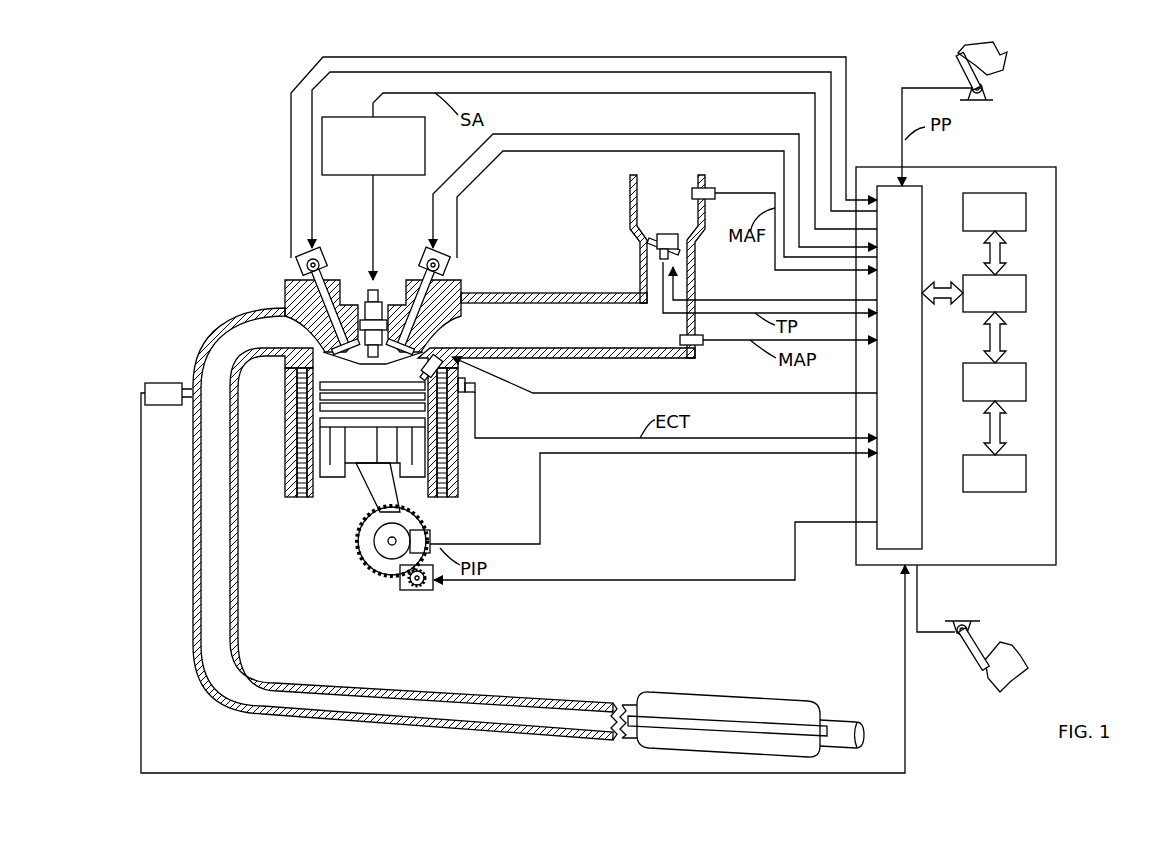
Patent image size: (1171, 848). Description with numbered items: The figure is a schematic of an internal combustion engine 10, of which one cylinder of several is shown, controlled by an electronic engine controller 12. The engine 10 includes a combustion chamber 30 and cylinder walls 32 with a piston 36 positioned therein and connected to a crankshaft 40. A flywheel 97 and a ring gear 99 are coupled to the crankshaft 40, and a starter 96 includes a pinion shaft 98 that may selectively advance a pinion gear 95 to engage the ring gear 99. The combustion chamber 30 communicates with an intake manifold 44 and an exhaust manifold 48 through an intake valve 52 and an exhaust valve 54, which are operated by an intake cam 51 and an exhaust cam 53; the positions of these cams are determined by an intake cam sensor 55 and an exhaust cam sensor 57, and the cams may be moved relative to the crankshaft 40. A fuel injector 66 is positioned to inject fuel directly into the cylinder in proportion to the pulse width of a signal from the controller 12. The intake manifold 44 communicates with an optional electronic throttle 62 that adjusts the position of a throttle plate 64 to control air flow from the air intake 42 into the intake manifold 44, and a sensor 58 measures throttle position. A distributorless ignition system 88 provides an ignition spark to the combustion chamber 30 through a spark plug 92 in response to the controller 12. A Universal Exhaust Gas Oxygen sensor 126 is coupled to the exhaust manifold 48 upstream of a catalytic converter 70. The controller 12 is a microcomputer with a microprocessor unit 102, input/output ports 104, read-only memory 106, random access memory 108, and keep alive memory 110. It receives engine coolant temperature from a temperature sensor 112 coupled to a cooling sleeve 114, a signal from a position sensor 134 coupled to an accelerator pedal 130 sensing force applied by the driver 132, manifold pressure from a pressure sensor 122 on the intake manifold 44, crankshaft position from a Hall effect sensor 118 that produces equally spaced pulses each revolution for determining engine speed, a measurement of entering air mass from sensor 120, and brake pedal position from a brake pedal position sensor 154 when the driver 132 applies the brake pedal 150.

The internal combustion engine 10 is at (228, 238).
The electronic engine controller 12 is at (1056, 170).
The combustion chamber 30 is at (305, 452).
The cylinder walls 32 is at (322, 485).
The piston 36 is at (357, 487).
The crankshaft 40 is at (378, 566).
The air intake 42 is at (677, 218).
The intake manifold 44 is at (620, 341).
The exhaust manifold 48 is at (268, 342).
The intake cam 51 is at (426, 252).
The intake valve 52 is at (440, 333).
The exhaust cam 53 is at (320, 252).
The exhaust valve 54 is at (322, 325).
The intake cam sensor 55 is at (445, 275).
The exhaust cam sensor 57 is at (300, 262).
The throttle position sensor 58 is at (650, 266).
The electronic throttle 62 is at (676, 243).
The throttle plate 64 is at (650, 243).
The fuel injector 66 is at (440, 372).
The catalytic converter 70 is at (650, 690).
The distributorless ignition system 88 is at (337, 117).
The spark plug 92 is at (378, 292).
The pinion gear 95 is at (420, 597).
The starter 96 is at (430, 588).
The flywheel 97 is at (362, 543).
The pinion shaft 98 is at (410, 595).
The ring gear 99 is at (385, 575).
The microprocessor unit 102 is at (1026, 292).
The input/output ports 104 is at (922, 187).
The read-only memory 106 is at (1026, 210).
The random access memory 108 is at (1026, 380).
The keep alive memory 110 is at (1026, 470).
The temperature sensor 112 is at (474, 384).
The cooling sleeve 114 is at (448, 455).
The Hall effect sensor 118 is at (430, 530).
The air mass sensor 120 is at (705, 188).
The pressure sensor 122 is at (700, 348).
The Universal Exhaust Gas Oxygen (UEGO) sensor 126 is at (145, 386).
The accelerator pedal 130 is at (965, 72).
The driver 132 is at (1005, 52).
The position sensor 134 is at (990, 92).
The brake pedal 150 is at (985, 672).
The brake pedal position sensor 154 is at (953, 628).